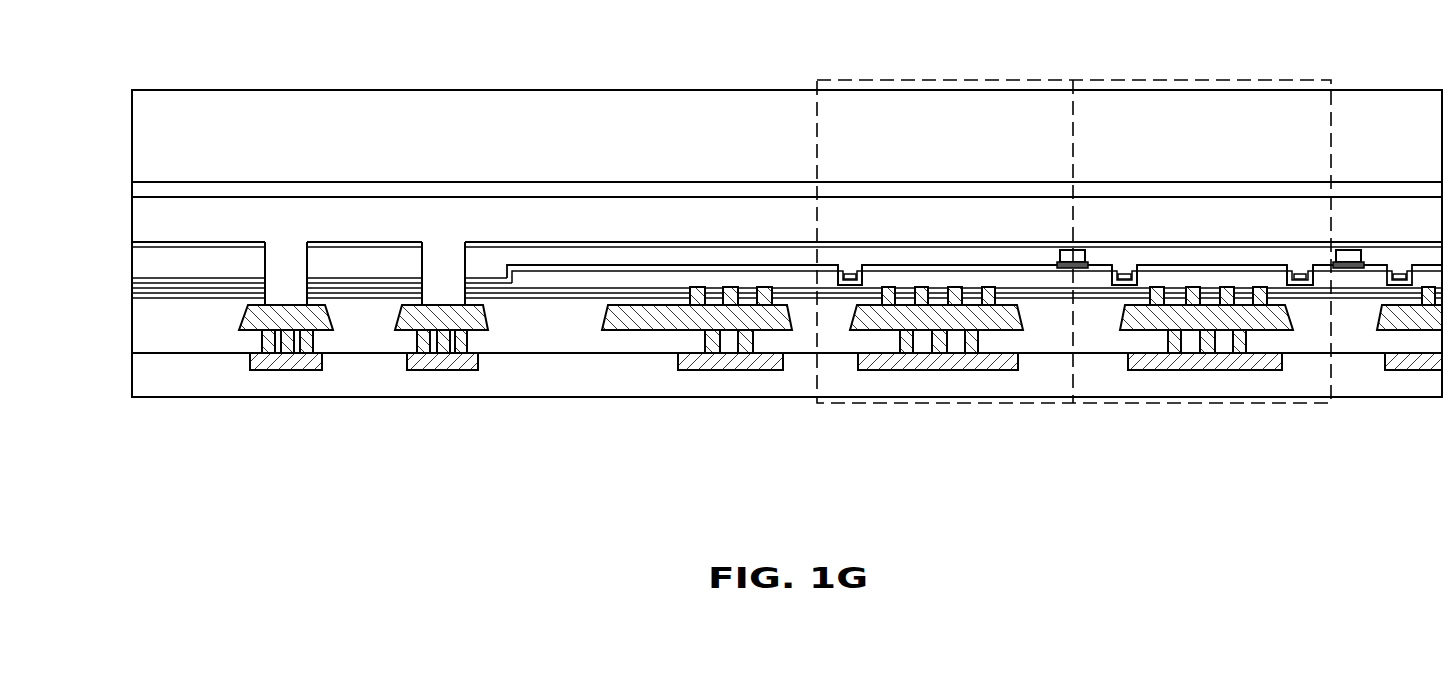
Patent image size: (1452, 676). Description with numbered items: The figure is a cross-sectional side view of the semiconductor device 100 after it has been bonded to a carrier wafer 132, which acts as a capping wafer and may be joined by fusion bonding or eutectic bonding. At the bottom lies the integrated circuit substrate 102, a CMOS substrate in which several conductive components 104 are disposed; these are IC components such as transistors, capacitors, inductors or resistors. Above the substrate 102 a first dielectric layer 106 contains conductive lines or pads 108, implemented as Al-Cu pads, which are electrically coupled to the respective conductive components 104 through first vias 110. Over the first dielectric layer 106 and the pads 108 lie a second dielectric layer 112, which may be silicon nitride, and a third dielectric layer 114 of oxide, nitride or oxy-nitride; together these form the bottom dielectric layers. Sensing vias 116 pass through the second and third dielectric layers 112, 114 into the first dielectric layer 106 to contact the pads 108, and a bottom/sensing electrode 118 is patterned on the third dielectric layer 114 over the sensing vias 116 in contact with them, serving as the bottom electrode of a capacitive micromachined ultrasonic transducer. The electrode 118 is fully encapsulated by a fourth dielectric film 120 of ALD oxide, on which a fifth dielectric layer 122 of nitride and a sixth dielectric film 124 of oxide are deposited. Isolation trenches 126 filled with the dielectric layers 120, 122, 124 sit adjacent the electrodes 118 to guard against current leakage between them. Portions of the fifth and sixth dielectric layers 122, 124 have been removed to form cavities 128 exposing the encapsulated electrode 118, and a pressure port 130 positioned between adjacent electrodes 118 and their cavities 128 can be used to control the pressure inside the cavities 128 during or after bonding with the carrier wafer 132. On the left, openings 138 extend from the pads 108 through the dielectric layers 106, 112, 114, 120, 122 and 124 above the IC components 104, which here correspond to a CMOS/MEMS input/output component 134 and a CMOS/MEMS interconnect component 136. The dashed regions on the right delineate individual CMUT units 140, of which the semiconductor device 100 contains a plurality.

The semiconductor device 100 is at (1440, 521).
The integrated circuit substrate 102 is at (600, 386).
The conductive components 104 is at (305, 362).
The first dielectric layer 106 is at (128, 298).
The conductive lines or pads 108 is at (252, 323).
The first vias 110 is at (307, 343).
The second dielectric layer 112 is at (133, 298).
The third dielectric layer 114 is at (133, 290).
The sensing vias 116 is at (765, 287).
The bottom/sensing electrode 118 is at (1003, 272).
The fourth dielectric film 120 is at (150, 278).
The fifth dielectric layer 122 is at (165, 285).
The sixth dielectric film 124 is at (190, 262).
The isolation trenches 126 is at (851, 262).
The cavities 128 is at (836, 260).
The pressure port 130 is at (1072, 250).
The carrier wafer 132 is at (595, 149).
The CMOS/MEMS input/output component 134 is at (272, 386).
The CMOS/MEMS interconnect component 136 is at (428, 386).
The openings 138 is at (285, 268).
The CMUT units 140 is at (963, 405).